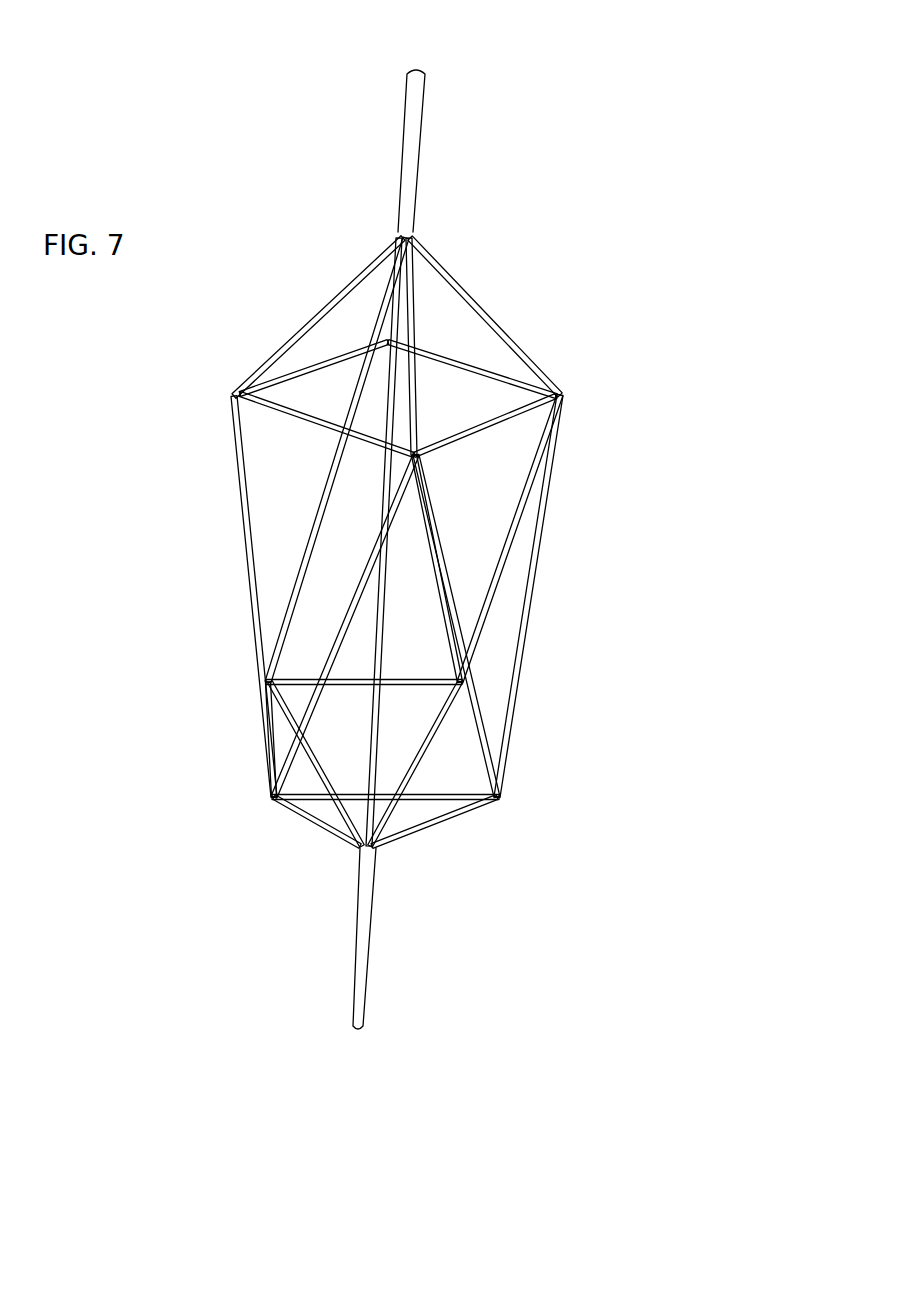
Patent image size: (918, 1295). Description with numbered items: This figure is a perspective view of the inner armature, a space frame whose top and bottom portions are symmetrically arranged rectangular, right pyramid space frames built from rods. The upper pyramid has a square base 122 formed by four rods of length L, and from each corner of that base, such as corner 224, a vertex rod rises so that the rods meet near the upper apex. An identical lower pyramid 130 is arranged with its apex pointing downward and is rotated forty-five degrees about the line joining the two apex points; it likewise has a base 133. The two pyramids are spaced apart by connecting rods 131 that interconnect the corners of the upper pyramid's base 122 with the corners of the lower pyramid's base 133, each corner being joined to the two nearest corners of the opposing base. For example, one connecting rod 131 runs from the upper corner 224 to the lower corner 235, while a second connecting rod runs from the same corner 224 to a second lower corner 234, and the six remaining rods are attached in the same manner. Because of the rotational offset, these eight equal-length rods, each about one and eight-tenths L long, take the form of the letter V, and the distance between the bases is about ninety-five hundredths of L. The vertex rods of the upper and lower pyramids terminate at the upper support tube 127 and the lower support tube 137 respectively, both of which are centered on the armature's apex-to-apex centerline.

The upper support tube 127 is at (417, 72).
The lower pyramid 130 is at (462, 883).
The base of the upper pyramid 122 is at (488, 437).
The corner of the upper pyramid base 224 is at (400, 458).
The connecting rods 131 is at (343, 613).
The corner of the lower pyramid 235 is at (270, 800).
The second corner of the lower pyramid 234 is at (500, 797).
The base of the lower pyramid 133 is at (297, 817).
The lower support tube 137 is at (350, 1030).